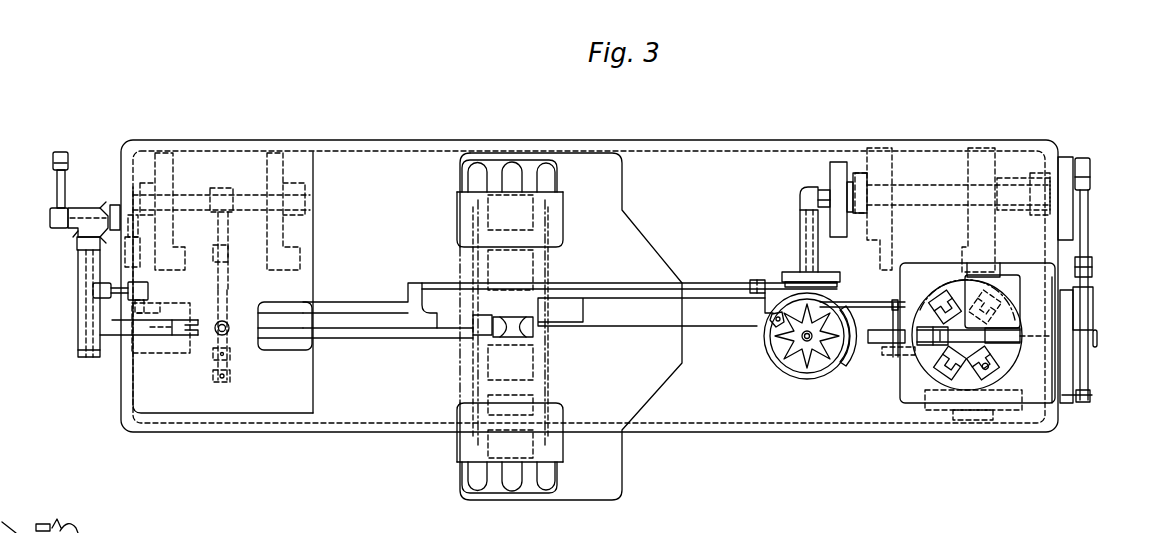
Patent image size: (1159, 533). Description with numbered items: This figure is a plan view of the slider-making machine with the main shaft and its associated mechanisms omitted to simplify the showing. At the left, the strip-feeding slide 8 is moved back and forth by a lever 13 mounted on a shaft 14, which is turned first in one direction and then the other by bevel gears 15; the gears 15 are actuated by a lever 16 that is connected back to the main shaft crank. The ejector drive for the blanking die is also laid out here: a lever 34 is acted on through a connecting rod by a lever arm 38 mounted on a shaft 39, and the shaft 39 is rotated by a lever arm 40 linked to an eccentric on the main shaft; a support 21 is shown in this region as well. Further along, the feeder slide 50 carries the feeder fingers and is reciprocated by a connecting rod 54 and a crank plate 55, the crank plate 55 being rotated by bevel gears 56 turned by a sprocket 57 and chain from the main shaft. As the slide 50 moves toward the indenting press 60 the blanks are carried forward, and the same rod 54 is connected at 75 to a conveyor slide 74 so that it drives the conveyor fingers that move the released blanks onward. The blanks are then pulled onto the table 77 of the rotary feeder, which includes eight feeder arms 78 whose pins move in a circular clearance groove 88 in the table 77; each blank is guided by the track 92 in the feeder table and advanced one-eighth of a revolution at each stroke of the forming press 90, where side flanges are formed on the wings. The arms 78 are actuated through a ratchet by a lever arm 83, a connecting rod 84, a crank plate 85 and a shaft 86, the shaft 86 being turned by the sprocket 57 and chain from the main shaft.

The slide 8 is at (148, 330).
The lever 13 is at (118, 285).
The shaft 14 is at (92, 360).
The bevel gears 15 is at (100, 206).
The lever 16 is at (58, 186).
The upright support 21 is at (163, 163).
The lever 34 is at (223, 299).
The lever arm 38 is at (222, 229).
The shaft 39 is at (187, 198).
The lever arm 40 is at (135, 263).
The slide 50 is at (422, 320).
The connecting rod 54 is at (573, 287).
The crank plate 55 is at (787, 273).
The bevel gears 56 is at (818, 188).
The sprocket 57 is at (836, 167).
The indenting press 60 is at (625, 228).
The conveyor slide 74 is at (698, 318).
The connection point 75 is at (753, 297).
The table 77 is at (777, 365).
The feeder arms 78 is at (820, 358).
The lever arm 83 is at (1087, 318).
The connecting rod 84 is at (1087, 232).
The crank plate 85 is at (1067, 153).
The shaft 86 is at (920, 193).
The circular clearance groove 88 is at (820, 306).
The forming press 90 is at (875, 158).
The track 92 is at (838, 352).